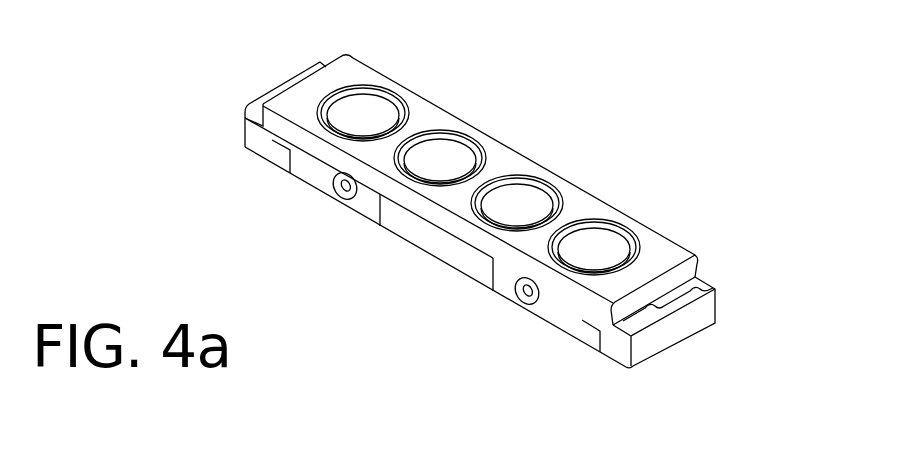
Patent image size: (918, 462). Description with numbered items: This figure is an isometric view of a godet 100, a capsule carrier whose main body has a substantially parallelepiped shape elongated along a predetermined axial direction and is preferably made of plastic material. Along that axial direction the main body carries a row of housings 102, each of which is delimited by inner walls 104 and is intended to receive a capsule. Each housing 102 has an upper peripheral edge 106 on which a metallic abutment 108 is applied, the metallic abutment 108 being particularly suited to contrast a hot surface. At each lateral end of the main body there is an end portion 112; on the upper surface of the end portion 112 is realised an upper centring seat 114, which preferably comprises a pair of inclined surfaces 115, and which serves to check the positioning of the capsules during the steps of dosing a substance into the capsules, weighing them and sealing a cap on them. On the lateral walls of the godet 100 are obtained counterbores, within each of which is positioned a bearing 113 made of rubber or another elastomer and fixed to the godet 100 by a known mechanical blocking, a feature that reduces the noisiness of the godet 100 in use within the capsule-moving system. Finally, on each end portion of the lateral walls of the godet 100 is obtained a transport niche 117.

The godet 100 is at (692, 94).
The housing 102 is at (368, 123).
The inner wall 104 is at (604, 240).
The upper peripheral edge 106 is at (447, 150).
The metallic abutment 108 is at (558, 193).
The end portion 112 is at (706, 313).
The bearing 113 is at (352, 198).
The upper centring seat 114 is at (287, 84).
The inclined surface 115 is at (637, 337).
The transport niche 117 is at (285, 152).